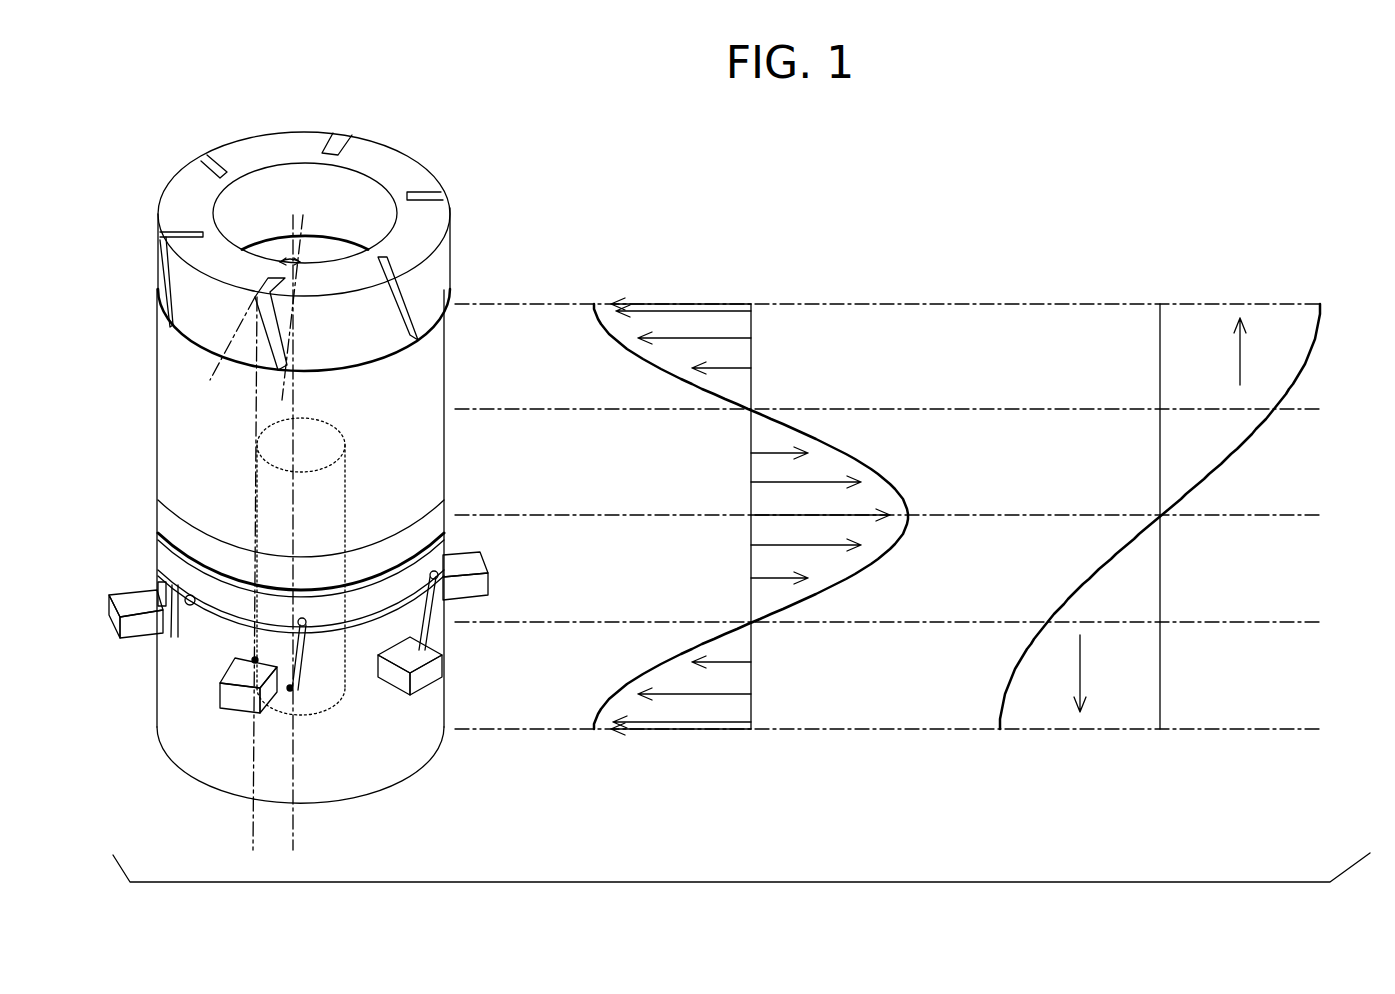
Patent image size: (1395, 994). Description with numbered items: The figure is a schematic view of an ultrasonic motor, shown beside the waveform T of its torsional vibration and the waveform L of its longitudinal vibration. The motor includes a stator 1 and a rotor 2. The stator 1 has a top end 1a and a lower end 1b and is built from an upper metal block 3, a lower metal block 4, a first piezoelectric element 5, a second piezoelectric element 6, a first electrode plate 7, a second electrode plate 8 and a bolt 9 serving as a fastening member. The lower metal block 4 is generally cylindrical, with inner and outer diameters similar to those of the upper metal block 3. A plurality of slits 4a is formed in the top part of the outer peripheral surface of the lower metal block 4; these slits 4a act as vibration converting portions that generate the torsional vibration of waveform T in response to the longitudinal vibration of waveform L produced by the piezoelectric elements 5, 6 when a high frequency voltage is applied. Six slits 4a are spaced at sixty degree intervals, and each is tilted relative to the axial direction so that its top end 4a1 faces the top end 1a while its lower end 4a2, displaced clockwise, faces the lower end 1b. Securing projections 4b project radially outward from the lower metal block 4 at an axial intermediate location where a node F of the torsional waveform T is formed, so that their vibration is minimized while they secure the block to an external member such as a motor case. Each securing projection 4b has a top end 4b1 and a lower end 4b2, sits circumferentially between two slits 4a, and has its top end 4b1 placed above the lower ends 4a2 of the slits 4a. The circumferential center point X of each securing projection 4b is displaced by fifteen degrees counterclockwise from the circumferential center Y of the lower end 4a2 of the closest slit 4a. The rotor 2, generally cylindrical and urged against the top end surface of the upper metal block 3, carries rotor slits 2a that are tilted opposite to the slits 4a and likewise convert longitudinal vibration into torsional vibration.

The stator 1 is at (293, 547).
The top end 1a is at (160, 304).
The lower end 1b is at (180, 765).
The rotor 2 is at (324, 237).
The rotor slit 2a is at (325, 150).
The upper metal block 3 is at (440, 378).
The lower metal block 4 is at (317, 646).
The slit 4a is at (180, 625).
The top end of slit 4a1 is at (196, 600).
The lower end of slit 4a2 is at (176, 640).
The securing projection 4b is at (112, 628).
The top end of securing projection 4b1 is at (158, 588).
The lower end of securing projection 4b2 is at (155, 640).
The first piezoelectric element 5 is at (440, 508).
The second piezoelectric element 6 is at (442, 545).
The first electrode plate 7 is at (416, 560).
The second electrode plate 8 is at (301, 597).
The bolt 9 is at (345, 465).
The circumferential center point of securing projection X is at (252, 660).
The circumferential center of slit lower end Y is at (293, 688).
The waveform of torsional vibration T is at (805, 434).
The node F is at (755, 622).
The waveform of longitudinal vibration L is at (1318, 322).